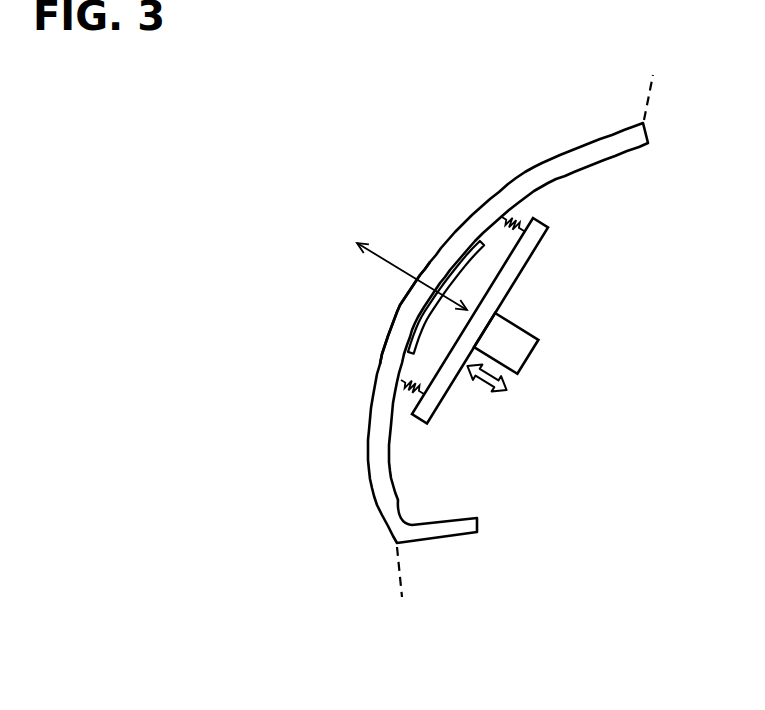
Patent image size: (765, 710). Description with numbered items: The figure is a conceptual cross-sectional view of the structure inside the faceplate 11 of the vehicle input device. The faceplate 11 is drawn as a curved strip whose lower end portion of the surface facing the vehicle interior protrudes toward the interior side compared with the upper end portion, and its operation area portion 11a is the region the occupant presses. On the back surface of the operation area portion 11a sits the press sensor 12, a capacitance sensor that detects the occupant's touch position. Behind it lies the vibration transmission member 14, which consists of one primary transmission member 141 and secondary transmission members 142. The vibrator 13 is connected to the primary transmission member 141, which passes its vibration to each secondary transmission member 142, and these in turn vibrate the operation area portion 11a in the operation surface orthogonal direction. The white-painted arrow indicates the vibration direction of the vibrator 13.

The faceplate 11 is at (555, 160).
The operation area portion 11a is at (390, 308).
The press sensor 12 is at (483, 250).
The vibrator 13 is at (533, 358).
The vibration transmission member 14 is at (445, 274).
The primary transmission member 141 is at (512, 283).
The secondary transmission member 142 is at (512, 221).